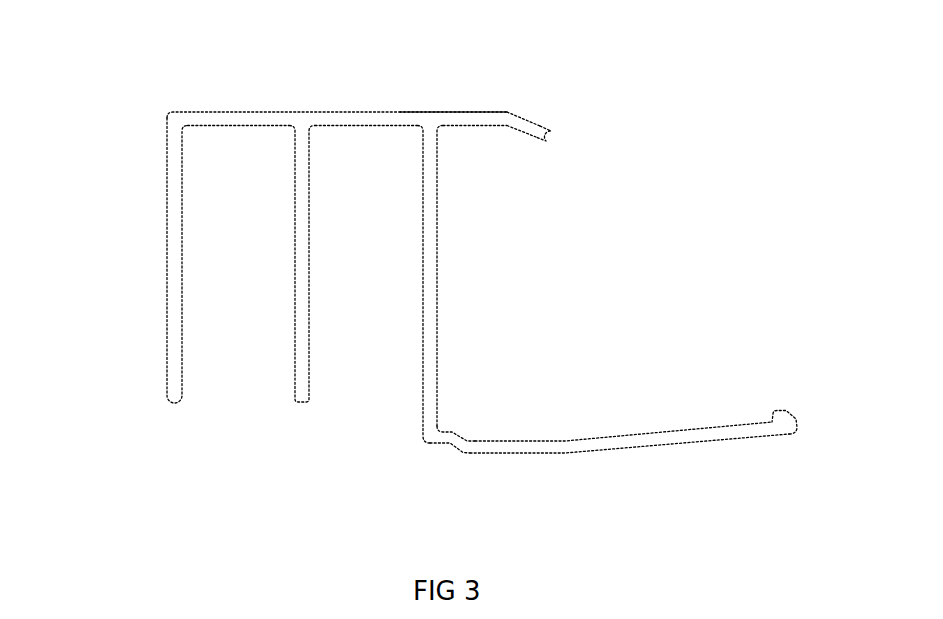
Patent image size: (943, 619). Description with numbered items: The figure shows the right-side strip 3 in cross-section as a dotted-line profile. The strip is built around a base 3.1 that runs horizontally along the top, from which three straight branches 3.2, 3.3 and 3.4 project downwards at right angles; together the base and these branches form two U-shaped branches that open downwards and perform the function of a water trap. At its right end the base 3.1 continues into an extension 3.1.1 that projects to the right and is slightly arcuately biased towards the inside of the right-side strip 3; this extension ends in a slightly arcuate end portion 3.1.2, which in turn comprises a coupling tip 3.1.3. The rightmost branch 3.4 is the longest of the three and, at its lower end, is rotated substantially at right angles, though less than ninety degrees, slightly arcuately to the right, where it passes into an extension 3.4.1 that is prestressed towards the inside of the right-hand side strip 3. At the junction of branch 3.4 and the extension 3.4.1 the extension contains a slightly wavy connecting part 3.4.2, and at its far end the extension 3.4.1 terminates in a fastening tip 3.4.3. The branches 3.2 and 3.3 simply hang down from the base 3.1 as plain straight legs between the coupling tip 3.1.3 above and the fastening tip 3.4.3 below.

The right-side strip 3 is at (146, 110).
The base 3.1 is at (301, 112).
The extension 3.1.1 is at (469, 112).
The slightly arcuate end portion 3.1.2 is at (525, 118).
The coupling tip 3.1.3 is at (554, 138).
The straight branch 3.2 is at (167, 273).
The straight branch 3.3 is at (300, 403).
The straight branch 3.4 is at (437, 214).
The extension 3.4.1 is at (545, 455).
The slightly wavy connecting part 3.4.2 is at (452, 446).
The fastening tip 3.4.3 is at (800, 421).